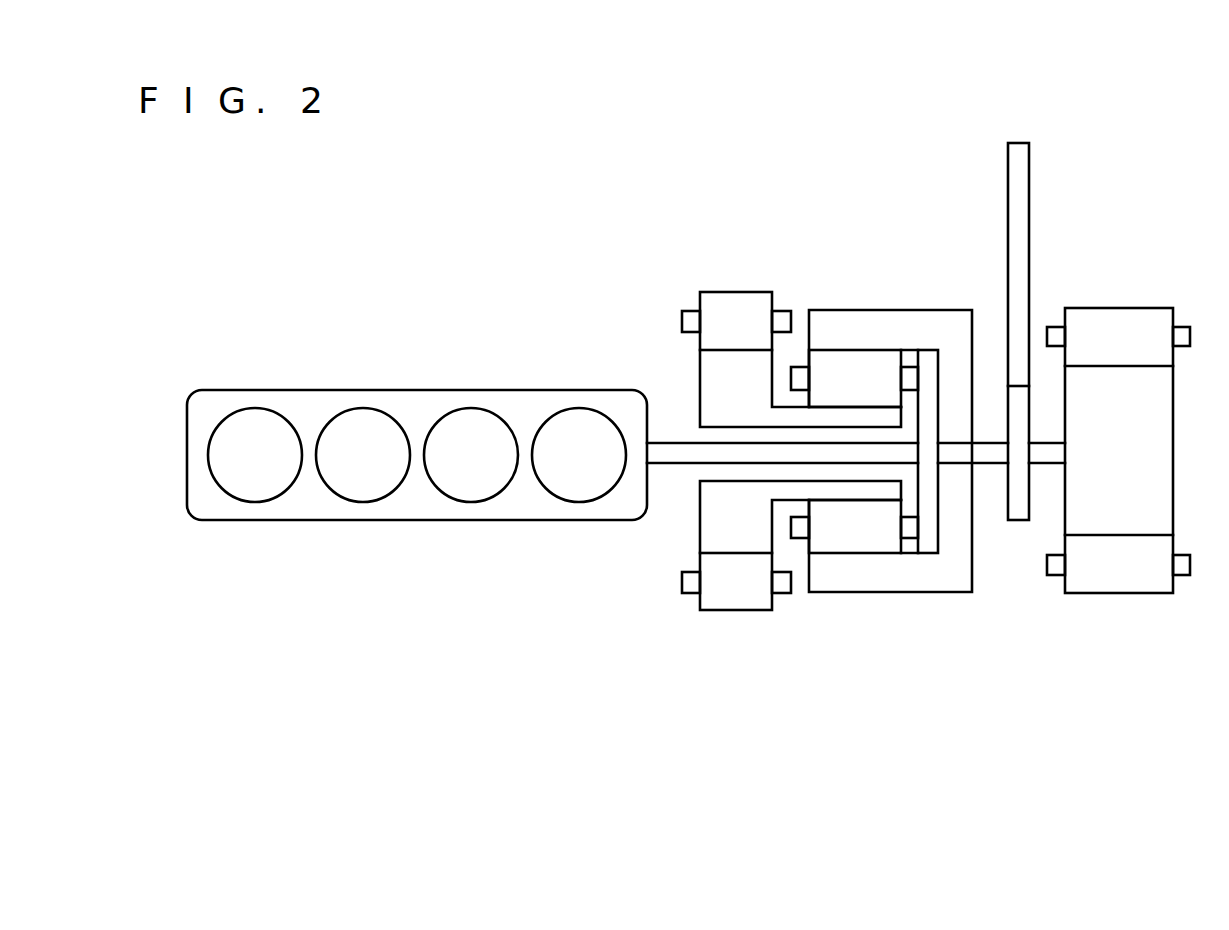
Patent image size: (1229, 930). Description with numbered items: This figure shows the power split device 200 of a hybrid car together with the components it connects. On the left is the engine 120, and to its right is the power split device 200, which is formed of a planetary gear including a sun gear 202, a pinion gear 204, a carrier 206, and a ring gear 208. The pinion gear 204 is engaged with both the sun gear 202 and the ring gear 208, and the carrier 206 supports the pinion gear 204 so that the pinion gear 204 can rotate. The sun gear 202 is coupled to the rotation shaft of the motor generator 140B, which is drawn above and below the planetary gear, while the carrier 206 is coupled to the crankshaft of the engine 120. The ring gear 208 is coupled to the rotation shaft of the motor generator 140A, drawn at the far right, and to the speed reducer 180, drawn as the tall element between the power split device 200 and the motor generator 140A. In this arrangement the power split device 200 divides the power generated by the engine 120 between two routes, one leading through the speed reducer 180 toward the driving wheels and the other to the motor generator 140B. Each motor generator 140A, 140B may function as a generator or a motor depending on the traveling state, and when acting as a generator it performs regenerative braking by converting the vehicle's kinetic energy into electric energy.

The engine 120 is at (420, 390).
The motor generator (MG(2)) 140A is at (1118, 308).
The motor generator (MG(1)) 140B is at (738, 292).
The speed reducer 180 is at (1050, 117).
The power split device 200 is at (877, 447).
The sun gear 202 is at (840, 502).
The pinion gear 204 is at (870, 553).
The carrier 206 is at (915, 483).
The ring gear 208 is at (937, 593).